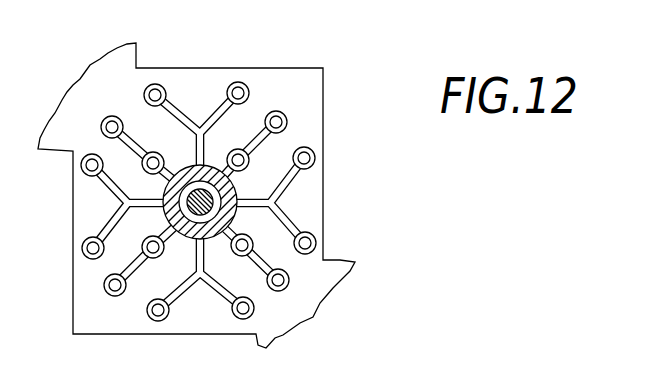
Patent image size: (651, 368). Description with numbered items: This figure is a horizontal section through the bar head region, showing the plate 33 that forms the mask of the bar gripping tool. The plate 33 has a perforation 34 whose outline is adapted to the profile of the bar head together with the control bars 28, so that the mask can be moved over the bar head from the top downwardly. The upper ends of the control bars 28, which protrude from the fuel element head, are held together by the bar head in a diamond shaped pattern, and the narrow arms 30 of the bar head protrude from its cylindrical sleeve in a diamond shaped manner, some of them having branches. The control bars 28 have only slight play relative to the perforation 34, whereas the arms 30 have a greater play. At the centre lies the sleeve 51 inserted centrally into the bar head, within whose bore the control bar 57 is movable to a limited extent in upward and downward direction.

The control bars 28 is at (277, 112).
The arms 30 is at (120, 145).
The plate 33 is at (316, 112).
The perforation 34 is at (103, 183).
The sleeve 51 is at (187, 177).
The control bar 57 is at (207, 199).